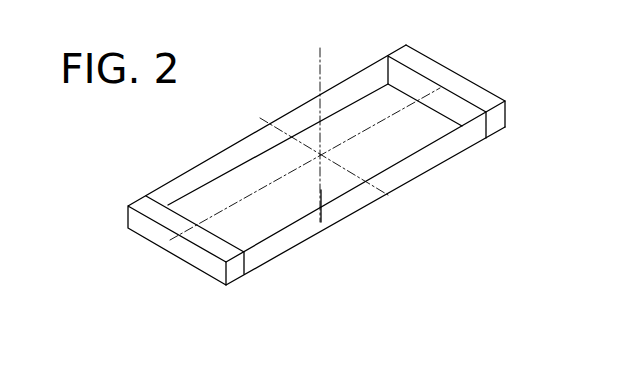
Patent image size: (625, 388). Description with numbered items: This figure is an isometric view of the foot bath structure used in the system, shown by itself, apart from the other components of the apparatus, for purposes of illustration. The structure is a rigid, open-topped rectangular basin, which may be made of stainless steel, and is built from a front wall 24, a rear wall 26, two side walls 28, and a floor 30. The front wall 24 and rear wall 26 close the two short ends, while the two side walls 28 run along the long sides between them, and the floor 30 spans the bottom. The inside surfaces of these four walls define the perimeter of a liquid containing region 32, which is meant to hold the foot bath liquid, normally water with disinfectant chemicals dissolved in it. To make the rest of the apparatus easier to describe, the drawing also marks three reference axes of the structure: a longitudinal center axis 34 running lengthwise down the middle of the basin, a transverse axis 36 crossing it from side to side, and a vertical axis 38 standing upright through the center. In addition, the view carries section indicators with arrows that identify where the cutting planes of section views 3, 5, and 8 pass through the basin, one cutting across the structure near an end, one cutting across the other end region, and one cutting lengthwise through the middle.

The front wall 24 is at (213, 267).
The rear wall 26 is at (480, 98).
The side walls 28 is at (302, 118).
The floor 30 is at (210, 203).
The liquid containing region 32 is at (227, 180).
The longitudinal center axis 34 is at (215, 218).
The transverse axis 36 is at (352, 173).
The vertical axis 38 is at (322, 190).
The section line 3- 3 is at (463, 68).
The section line 5- 5 is at (127, 193).
The section line 8- 8 is at (388, 45).